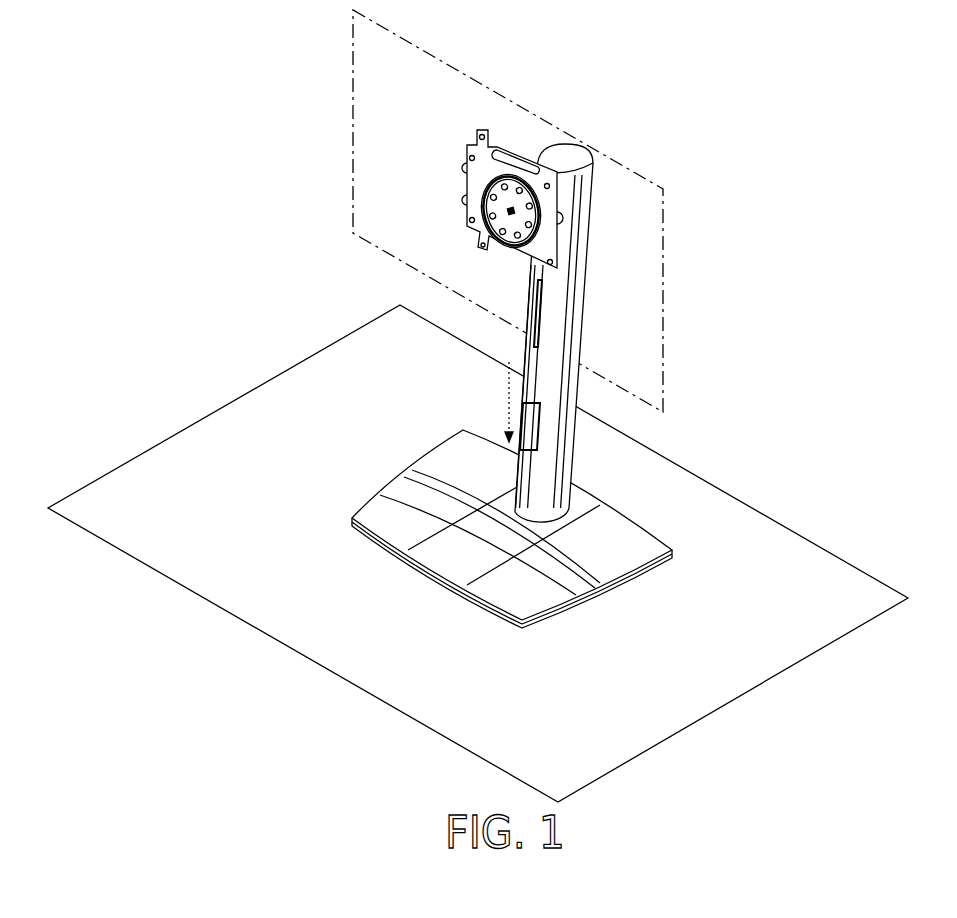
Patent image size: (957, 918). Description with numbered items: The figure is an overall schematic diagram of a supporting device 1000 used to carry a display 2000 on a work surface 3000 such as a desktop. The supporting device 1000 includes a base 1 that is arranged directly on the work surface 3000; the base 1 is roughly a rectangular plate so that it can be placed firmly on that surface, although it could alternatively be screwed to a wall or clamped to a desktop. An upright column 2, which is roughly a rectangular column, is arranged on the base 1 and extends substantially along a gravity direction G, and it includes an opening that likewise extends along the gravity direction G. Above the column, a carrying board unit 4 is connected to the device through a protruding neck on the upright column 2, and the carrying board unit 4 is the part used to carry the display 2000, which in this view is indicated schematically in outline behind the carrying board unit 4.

The base 1 is at (640, 548).
The upright column 2 is at (552, 393).
The carrying board unit 4 is at (484, 116).
The supporting device 1000 is at (585, 386).
The display 2000 is at (696, 236).
The work surface 3000 is at (790, 645).
The gravity direction G is at (499, 402).